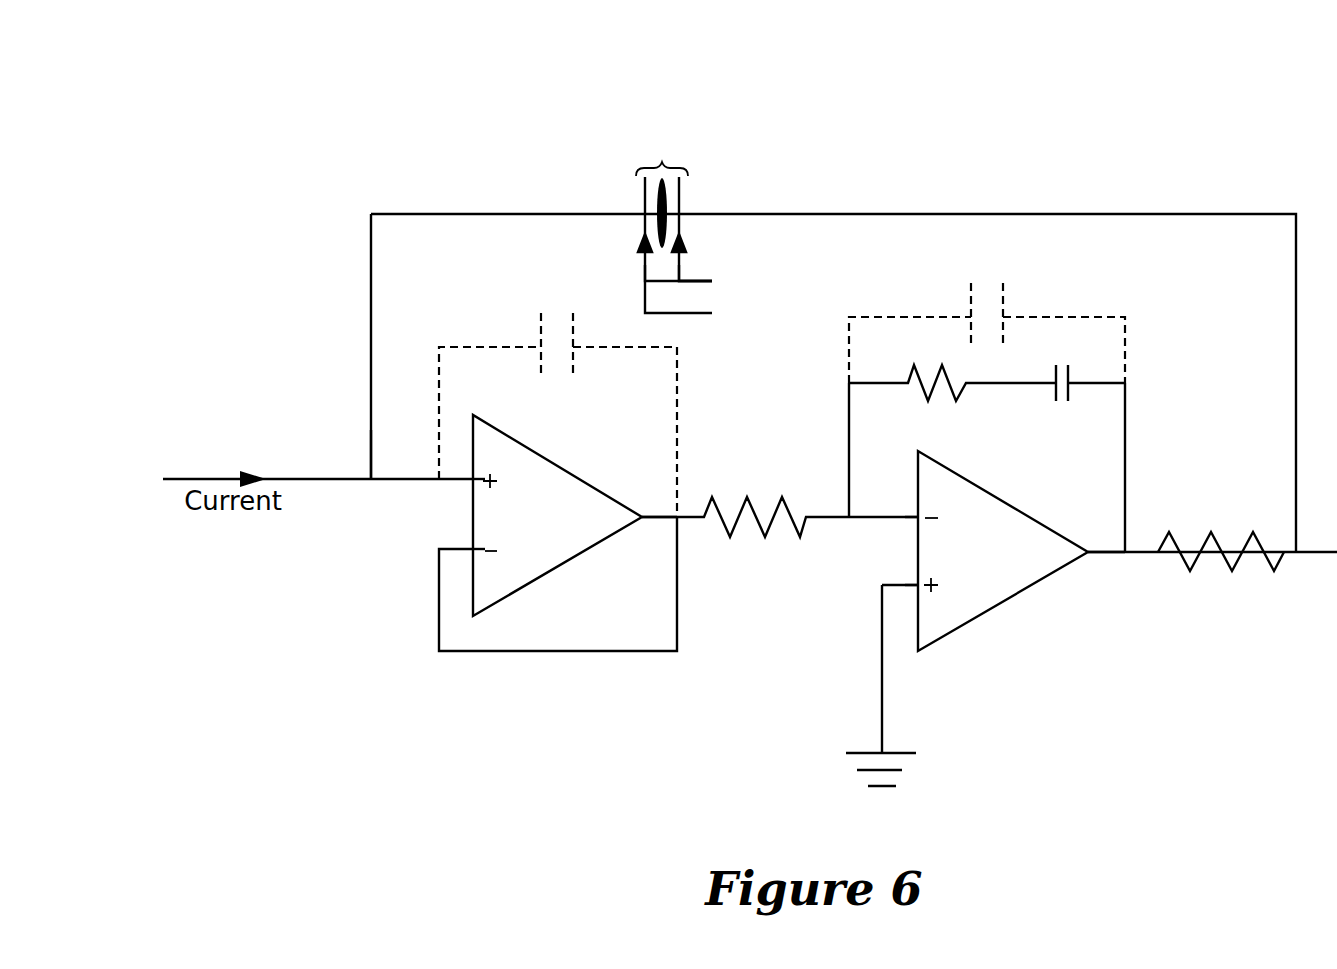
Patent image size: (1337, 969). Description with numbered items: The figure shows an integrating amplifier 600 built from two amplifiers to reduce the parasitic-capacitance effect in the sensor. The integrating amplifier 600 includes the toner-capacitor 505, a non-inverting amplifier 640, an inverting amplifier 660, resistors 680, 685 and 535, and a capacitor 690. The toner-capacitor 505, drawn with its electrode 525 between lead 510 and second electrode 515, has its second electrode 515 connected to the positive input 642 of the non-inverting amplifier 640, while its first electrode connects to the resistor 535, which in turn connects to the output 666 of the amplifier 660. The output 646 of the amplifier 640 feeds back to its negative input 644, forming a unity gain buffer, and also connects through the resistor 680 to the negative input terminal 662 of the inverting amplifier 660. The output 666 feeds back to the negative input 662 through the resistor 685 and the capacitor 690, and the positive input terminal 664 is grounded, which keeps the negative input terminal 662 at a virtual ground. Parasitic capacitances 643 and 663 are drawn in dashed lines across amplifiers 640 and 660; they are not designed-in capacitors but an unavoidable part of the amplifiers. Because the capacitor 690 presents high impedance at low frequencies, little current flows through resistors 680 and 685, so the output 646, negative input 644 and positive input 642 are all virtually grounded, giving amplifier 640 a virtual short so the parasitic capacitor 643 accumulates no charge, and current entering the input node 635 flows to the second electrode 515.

The integrating amplifier 600 is at (994, 148).
The toner-capacitor 505 is at (674, 206).
The magnetic core / sensing element 525 is at (670, 192).
The sensor lead 510 is at (735, 279).
The second electrode 515 is at (718, 295).
The input node 635 is at (365, 462).
The non-inverting amplifier 640 is at (558, 533).
The positive input 642 is at (499, 464).
The negative input 644 is at (493, 564).
The output 646 is at (656, 513).
The parasitic capacitance 643 is at (558, 400).
The resistor 680 is at (755, 540).
The inverting amplifier 660 is at (1003, 551).
The negative input terminal 662 is at (944, 501).
The positive input terminal 664 is at (938, 601).
The output 666 is at (1085, 547).
The resistor 685 is at (909, 400).
The capacitor 690 is at (1047, 400).
The parasitic capacitance 663 is at (987, 317).
The resistor 535 is at (1221, 537).